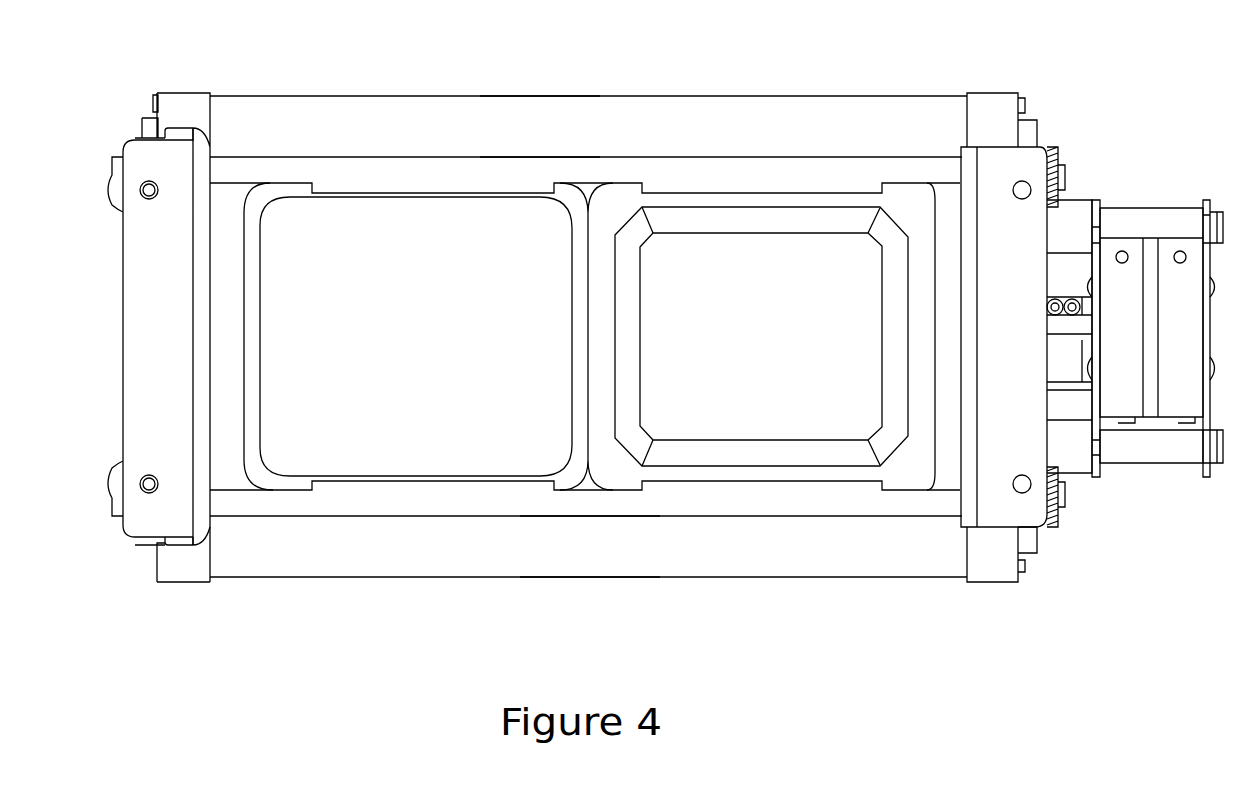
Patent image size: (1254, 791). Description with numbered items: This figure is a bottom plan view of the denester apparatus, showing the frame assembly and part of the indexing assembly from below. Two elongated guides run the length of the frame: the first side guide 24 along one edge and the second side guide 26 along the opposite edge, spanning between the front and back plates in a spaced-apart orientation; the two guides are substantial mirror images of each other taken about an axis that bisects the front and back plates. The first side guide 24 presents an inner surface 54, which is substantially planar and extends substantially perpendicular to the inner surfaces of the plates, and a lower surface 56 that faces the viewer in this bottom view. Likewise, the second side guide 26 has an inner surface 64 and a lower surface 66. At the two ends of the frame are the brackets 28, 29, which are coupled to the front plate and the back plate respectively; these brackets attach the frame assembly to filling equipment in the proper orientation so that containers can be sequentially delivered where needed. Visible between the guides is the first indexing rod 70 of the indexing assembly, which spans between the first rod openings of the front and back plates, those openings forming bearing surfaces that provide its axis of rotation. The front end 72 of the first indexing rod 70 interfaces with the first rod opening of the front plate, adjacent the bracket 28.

The first side guide 24 is at (729, 577).
The second side guide 26 is at (668, 97).
The bracket 28 is at (1027, 158).
The bracket 29 is at (143, 523).
The inner surface 54 is at (406, 158).
The lower surface 56 is at (530, 123).
The inner surface 64 is at (438, 513).
The lower surface 66 is at (595, 557).
The first indexing rod 70 is at (807, 185).
The front end 72 is at (843, 500).